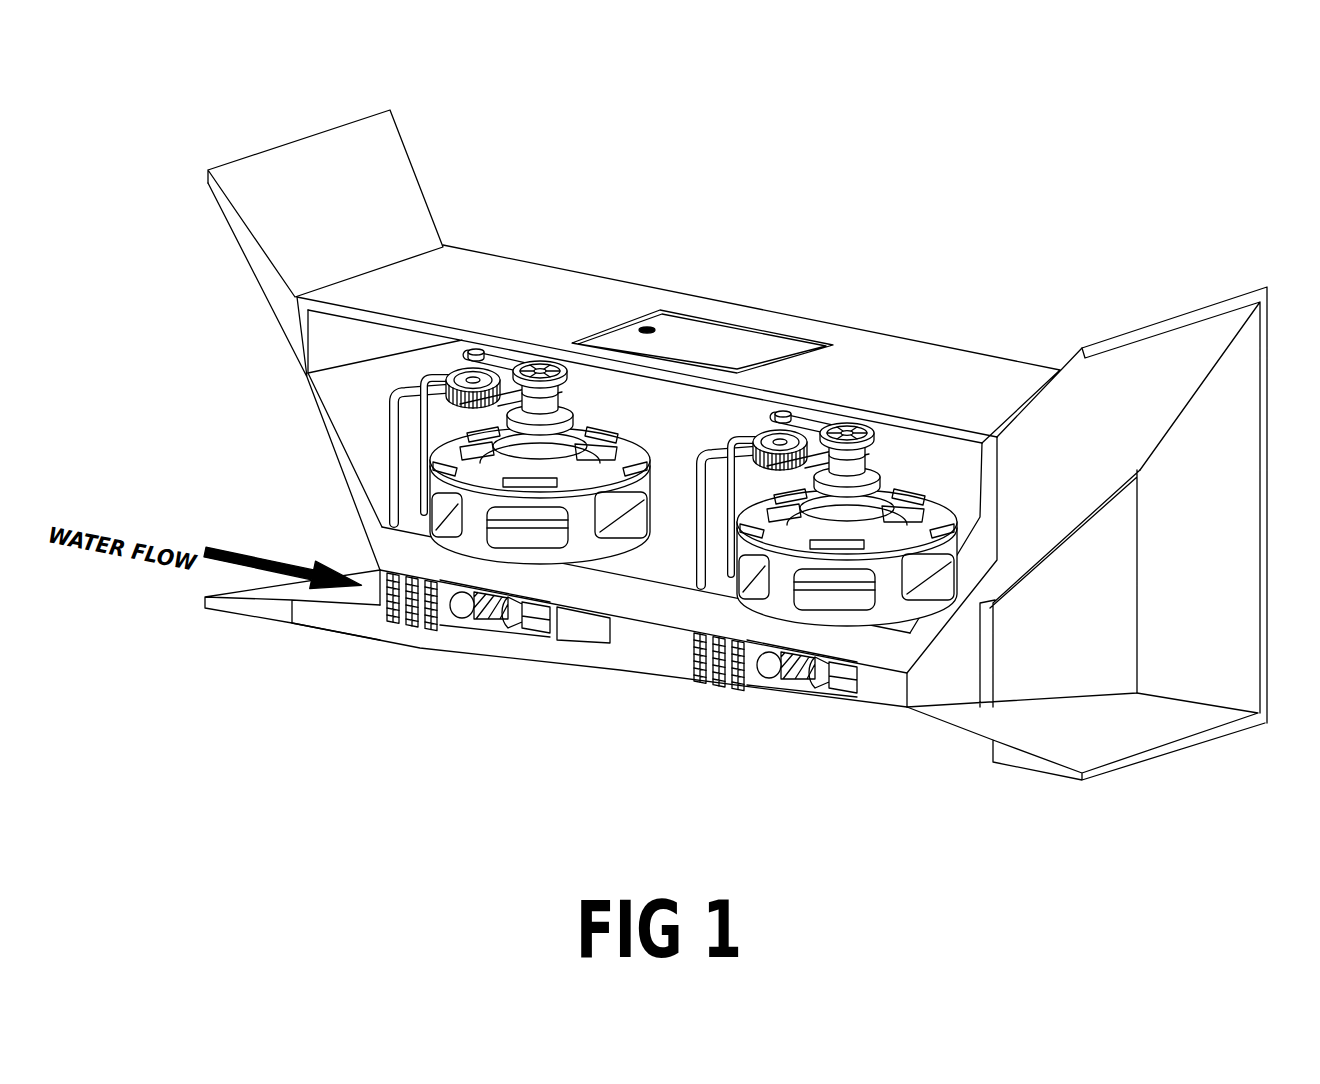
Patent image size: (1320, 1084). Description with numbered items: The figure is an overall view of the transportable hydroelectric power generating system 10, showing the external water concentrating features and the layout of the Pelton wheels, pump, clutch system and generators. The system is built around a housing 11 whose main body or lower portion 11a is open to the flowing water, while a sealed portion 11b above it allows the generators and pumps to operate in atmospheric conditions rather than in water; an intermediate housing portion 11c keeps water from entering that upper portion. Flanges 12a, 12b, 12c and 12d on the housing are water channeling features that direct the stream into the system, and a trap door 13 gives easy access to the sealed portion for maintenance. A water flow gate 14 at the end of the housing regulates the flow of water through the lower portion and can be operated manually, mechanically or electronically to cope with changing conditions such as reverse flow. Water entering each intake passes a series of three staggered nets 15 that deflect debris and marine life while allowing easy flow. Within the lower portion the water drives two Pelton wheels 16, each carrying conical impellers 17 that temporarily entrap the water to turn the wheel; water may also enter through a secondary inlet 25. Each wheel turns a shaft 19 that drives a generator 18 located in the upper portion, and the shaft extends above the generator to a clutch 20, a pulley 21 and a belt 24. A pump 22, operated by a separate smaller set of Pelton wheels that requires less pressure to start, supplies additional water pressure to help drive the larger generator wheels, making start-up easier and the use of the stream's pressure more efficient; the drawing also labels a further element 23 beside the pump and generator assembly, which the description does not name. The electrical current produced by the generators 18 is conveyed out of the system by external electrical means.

The transportable hydroelectric power generating system 10 is at (679, 207).
The housing 11 is at (318, 427).
The main body (lower portion) 11a is at (578, 632).
The sealed portion (upper portion) 11b is at (693, 403).
The intermediate housing portion 11c is at (643, 597).
The flange 12a is at (320, 132).
The flange 12b is at (243, 615).
The flange 12c is at (1210, 300).
The flange 12d is at (1113, 745).
The trap door 13 is at (780, 345).
The water flow gate 14 is at (1055, 650).
The nets 15 is at (400, 615).
The Pelton wheels 16 is at (490, 610).
The impellers 17 is at (517, 617).
The generators 18 is at (640, 450).
The shaft 19 is at (568, 385).
The clutch 20 is at (560, 368).
The pulley 21 is at (547, 363).
The pump 22 is at (455, 375).
The conduit 23 is at (412, 390).
The belt 24 is at (507, 357).
The secondary inlet 25 is at (810, 423).